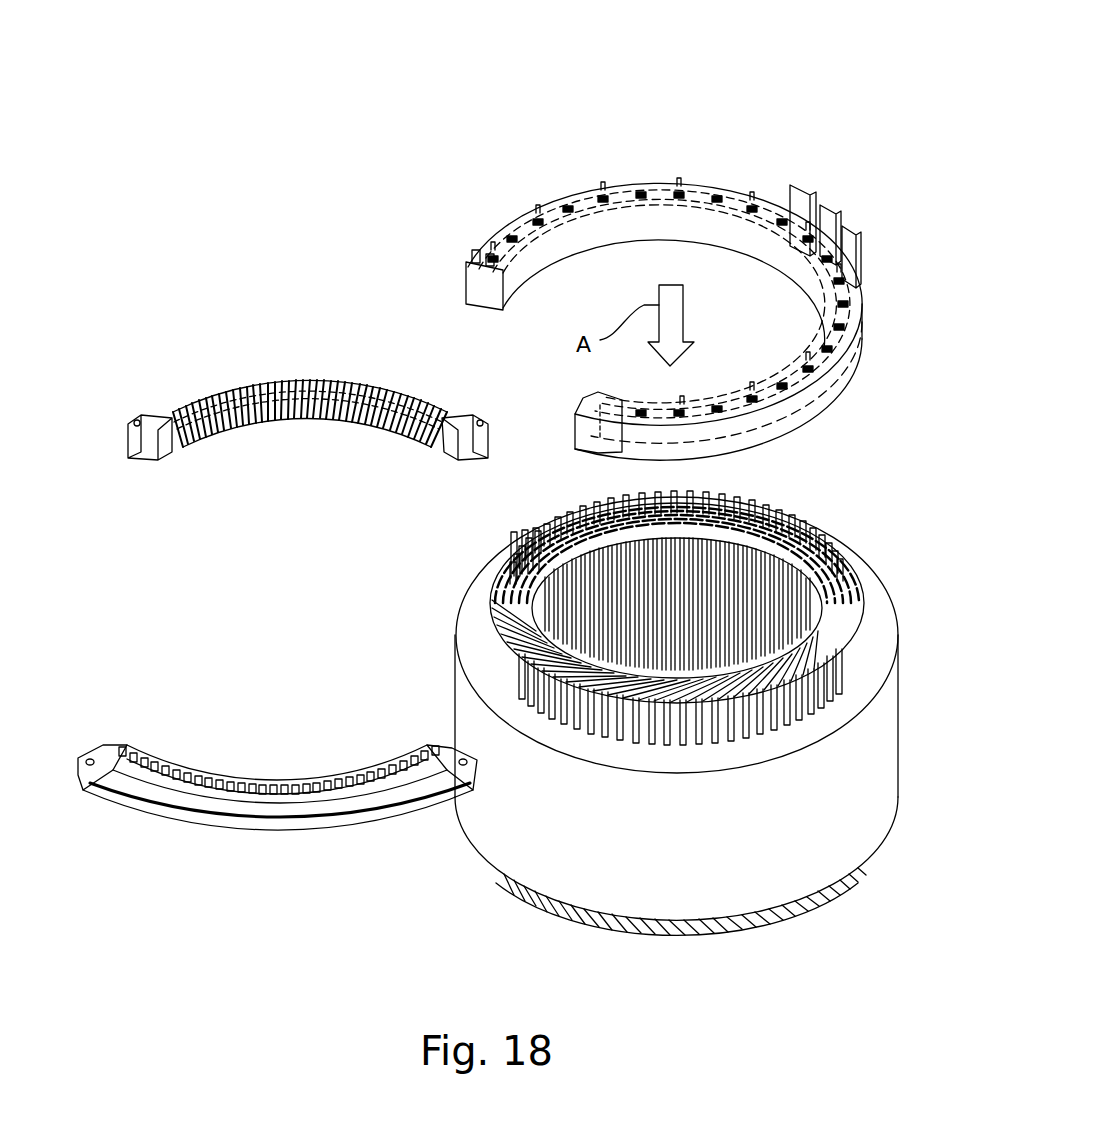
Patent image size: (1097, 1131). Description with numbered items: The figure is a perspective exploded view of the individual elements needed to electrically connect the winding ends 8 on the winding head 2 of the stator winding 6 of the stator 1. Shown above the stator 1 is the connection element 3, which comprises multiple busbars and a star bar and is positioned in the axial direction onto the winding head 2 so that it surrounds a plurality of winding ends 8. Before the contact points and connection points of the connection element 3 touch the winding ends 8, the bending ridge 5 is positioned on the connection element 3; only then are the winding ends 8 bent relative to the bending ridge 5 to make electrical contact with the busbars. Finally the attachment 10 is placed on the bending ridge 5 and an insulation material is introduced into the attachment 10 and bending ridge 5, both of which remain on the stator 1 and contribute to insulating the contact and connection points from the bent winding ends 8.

The stator 1 is at (893, 568).
The winding head 2 is at (665, 595).
The connection element 3 is at (705, 92).
The bending ridge 5 is at (315, 368).
The stator winding 6 is at (830, 527).
The winding ends 8 is at (518, 536).
The attachment 10 is at (273, 763).